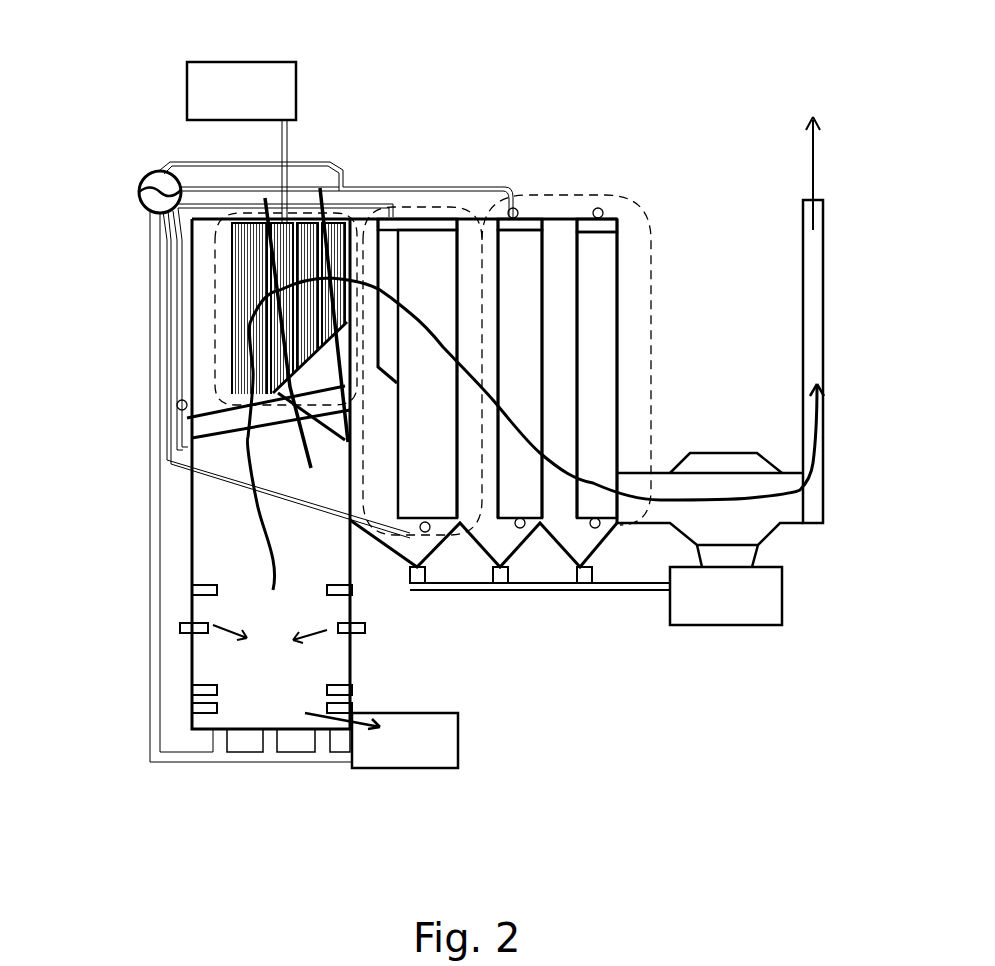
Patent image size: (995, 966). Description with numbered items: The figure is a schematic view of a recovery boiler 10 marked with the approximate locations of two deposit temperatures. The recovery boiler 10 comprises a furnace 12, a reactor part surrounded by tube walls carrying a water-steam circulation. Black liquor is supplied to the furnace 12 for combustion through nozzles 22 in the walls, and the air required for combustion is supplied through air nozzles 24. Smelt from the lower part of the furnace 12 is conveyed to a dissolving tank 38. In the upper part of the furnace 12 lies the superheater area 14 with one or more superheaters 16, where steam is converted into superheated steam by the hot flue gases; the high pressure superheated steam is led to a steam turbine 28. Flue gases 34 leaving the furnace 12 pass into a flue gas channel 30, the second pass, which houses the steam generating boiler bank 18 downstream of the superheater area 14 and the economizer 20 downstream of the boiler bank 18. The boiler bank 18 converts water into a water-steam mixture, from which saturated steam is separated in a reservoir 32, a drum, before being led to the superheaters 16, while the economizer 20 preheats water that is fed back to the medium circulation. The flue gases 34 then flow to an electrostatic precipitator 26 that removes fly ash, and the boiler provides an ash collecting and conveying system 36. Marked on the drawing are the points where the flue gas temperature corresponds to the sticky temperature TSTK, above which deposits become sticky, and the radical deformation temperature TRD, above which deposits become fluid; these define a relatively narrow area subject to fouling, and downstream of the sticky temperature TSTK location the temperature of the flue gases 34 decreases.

The recovery boiler 10 is at (528, 92).
The furnace 12 is at (222, 562).
The superheater area 14 is at (277, 213).
The superheater 16 is at (240, 245).
The steam generating boiler bank 18 is at (432, 208).
The economizer 20 is at (553, 188).
The nozzles 22 is at (368, 628).
The air nozzles 24 is at (347, 690).
The electrostatic precipitator 26 is at (708, 465).
The steam turbine 28 is at (192, 87).
The flue gas channel 30 is at (557, 305).
The reservoir 32 is at (137, 185).
The flue gases 34 is at (812, 170).
The ash collecting and conveying system 36 is at (760, 598).
The dissolving tank 38 is at (440, 737).
The radical deformation temperature TRD is at (177, 405).
The sticky temperature TSTK is at (192, 438).